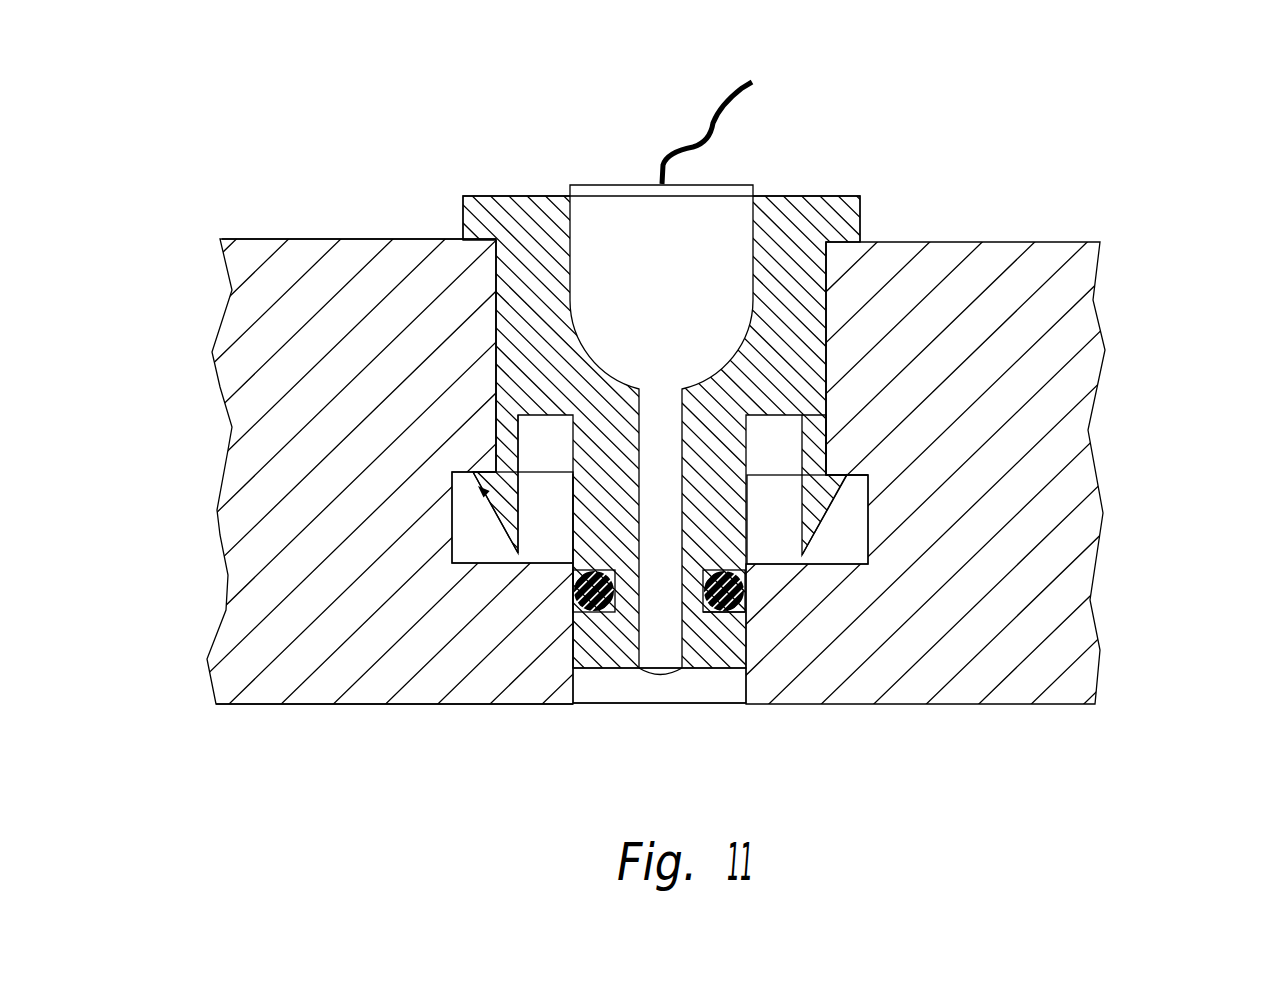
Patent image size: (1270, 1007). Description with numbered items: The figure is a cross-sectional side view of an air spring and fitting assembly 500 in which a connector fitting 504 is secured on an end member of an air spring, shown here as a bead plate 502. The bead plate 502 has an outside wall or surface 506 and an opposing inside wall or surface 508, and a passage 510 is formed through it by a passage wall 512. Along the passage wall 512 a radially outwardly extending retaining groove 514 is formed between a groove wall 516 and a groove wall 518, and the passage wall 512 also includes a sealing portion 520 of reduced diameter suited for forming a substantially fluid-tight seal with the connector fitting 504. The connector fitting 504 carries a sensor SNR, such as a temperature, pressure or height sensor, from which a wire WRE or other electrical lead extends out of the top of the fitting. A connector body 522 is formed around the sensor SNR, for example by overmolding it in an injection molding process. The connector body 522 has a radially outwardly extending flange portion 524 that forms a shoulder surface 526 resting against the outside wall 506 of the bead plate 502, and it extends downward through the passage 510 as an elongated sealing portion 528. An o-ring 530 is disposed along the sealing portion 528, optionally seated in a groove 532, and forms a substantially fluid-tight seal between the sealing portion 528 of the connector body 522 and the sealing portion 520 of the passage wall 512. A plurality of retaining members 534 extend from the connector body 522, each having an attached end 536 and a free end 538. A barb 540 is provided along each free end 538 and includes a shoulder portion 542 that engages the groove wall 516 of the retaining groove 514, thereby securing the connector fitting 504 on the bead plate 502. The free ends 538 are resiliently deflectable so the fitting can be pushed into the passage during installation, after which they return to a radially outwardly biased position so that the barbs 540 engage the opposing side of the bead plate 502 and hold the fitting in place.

The air spring and fitting assembly 500 is at (346, 112).
The bead plate 502 is at (252, 223).
The connector fitting 504 is at (572, 169).
The outside wall or surface 506 is at (350, 239).
The inside wall or surface 508 is at (230, 704).
The passage 510 is at (683, 704).
The passage wall 512 is at (828, 353).
The retaining groove 514 is at (866, 521).
The groove wall 516 is at (847, 474).
The groove wall 518 is at (822, 568).
The sealing portion 520 is at (570, 686).
The connector body 522 is at (522, 315).
The flange portion 524 is at (860, 212).
The shoulder surface 526 is at (484, 240).
The sealing portion 528 is at (578, 502).
The o-ring 530 is at (745, 593).
The groove 532 is at (724, 625).
The retaining members 534 is at (472, 491).
The attached end 536 is at (505, 443).
The free end 538 is at (500, 507).
The barb 540 is at (832, 495).
The shoulder portion 542 is at (838, 473).
The wire WRE is at (732, 95).
The sensor SNR is at (700, 227).